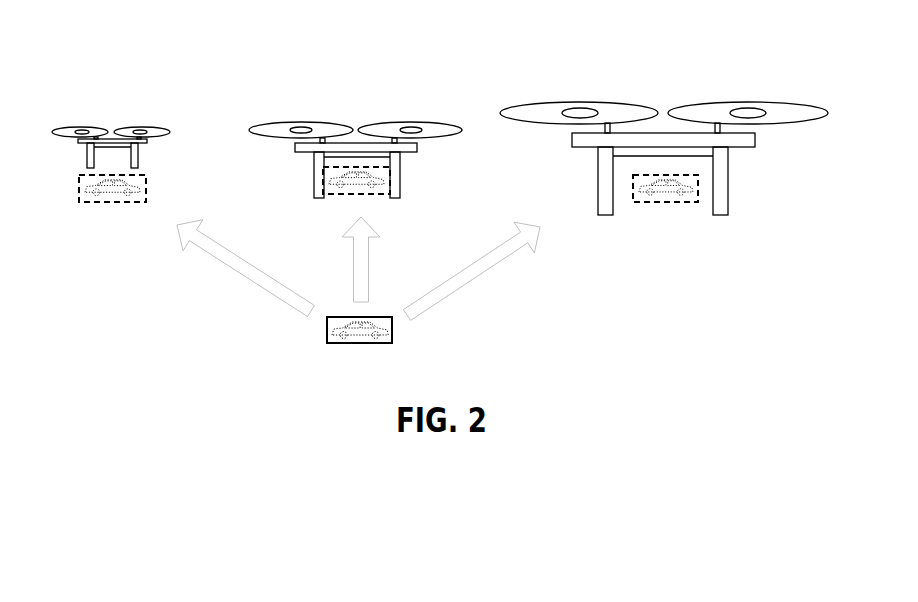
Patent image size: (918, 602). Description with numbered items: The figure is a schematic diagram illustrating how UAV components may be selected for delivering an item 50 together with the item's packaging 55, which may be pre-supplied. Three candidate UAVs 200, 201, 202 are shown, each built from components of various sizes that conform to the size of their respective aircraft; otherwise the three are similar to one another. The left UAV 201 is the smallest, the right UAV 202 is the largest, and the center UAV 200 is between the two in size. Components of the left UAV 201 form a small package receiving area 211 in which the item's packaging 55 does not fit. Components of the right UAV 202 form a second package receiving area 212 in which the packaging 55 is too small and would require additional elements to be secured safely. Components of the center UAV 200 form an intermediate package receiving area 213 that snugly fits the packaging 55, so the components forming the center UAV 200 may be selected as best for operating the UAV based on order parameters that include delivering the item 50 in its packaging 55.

The center UAV 200 is at (391, 101).
The left UAV 201 is at (147, 101).
The right UAV 202 is at (709, 78).
The small package receiving area 211 is at (118, 160).
The second package receiving area 212 is at (695, 167).
The intermediate package receiving area 213 is at (382, 164).
The item 50 is at (363, 335).
The item's packaging 55 is at (328, 333).